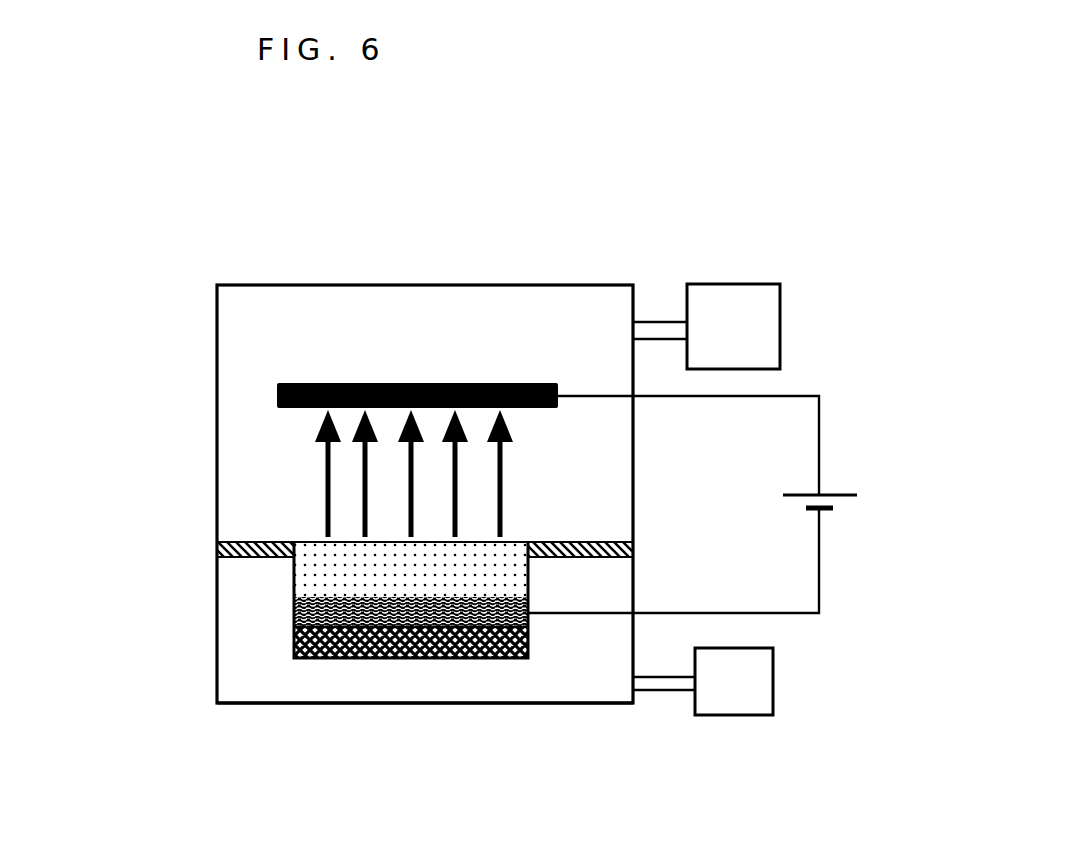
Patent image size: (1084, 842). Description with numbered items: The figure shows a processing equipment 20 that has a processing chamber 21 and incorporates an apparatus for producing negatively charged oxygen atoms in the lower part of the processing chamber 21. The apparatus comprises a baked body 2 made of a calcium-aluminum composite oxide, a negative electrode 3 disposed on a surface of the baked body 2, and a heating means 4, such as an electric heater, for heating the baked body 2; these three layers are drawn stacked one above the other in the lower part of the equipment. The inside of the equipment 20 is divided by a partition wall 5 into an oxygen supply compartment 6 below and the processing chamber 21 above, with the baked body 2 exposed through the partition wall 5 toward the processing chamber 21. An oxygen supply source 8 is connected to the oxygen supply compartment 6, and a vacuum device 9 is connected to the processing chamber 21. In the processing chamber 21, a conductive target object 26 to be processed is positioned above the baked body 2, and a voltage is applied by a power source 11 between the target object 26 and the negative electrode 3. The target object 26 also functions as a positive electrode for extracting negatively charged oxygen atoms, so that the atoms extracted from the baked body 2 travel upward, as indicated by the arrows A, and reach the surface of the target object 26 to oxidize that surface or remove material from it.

The processing equipment 20 is at (93, 197).
The processing chamber 21 is at (325, 322).
The conductive target object 26 is at (275, 388).
The ion emission direction A is at (318, 457).
The partition wall 5 is at (220, 550).
The baked body 2 is at (305, 578).
The negative electrode 3 is at (293, 618).
The heating means 4 is at (293, 658).
The oxygen supply compartment 6 is at (380, 689).
The power supply 11 is at (858, 490).
The vacuum device 9 is at (706, 326).
The oxygen supply source 8 is at (703, 681).